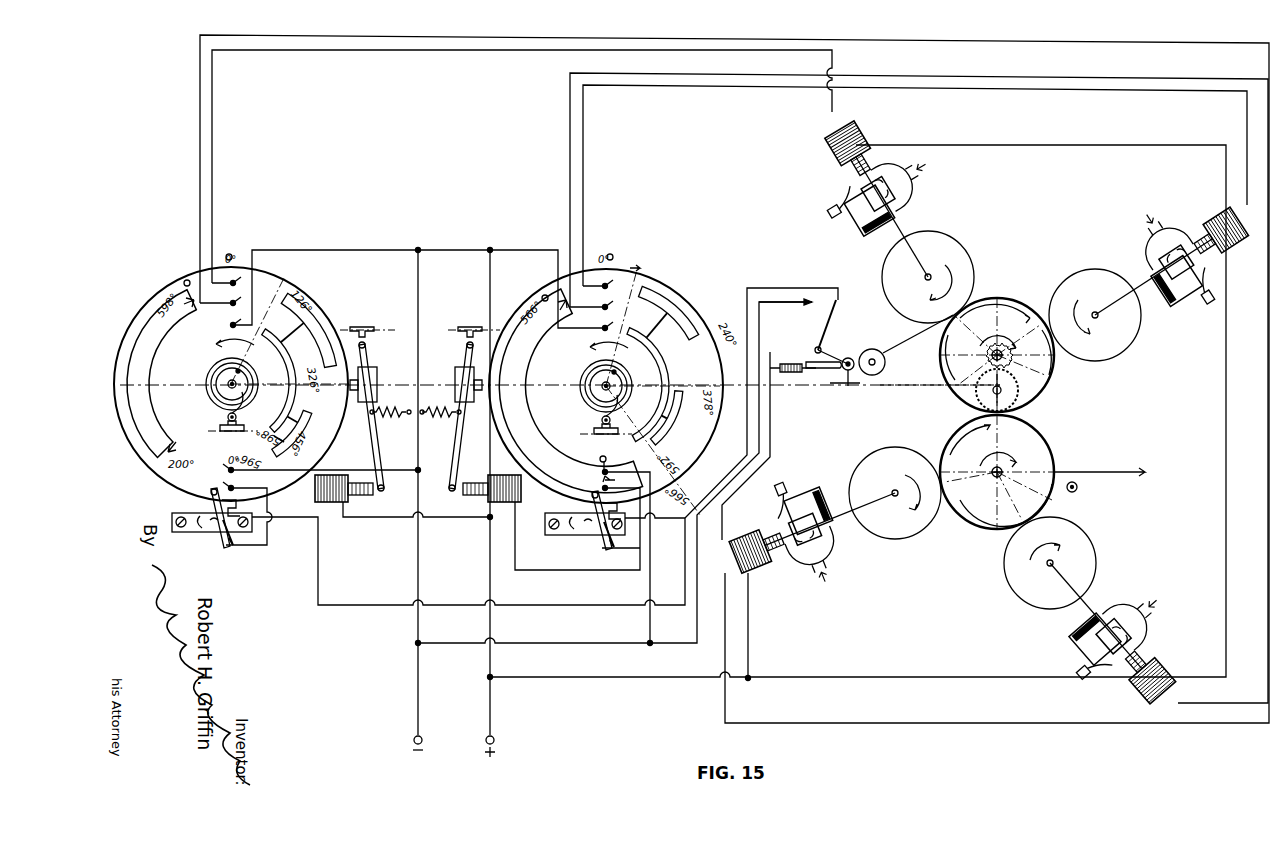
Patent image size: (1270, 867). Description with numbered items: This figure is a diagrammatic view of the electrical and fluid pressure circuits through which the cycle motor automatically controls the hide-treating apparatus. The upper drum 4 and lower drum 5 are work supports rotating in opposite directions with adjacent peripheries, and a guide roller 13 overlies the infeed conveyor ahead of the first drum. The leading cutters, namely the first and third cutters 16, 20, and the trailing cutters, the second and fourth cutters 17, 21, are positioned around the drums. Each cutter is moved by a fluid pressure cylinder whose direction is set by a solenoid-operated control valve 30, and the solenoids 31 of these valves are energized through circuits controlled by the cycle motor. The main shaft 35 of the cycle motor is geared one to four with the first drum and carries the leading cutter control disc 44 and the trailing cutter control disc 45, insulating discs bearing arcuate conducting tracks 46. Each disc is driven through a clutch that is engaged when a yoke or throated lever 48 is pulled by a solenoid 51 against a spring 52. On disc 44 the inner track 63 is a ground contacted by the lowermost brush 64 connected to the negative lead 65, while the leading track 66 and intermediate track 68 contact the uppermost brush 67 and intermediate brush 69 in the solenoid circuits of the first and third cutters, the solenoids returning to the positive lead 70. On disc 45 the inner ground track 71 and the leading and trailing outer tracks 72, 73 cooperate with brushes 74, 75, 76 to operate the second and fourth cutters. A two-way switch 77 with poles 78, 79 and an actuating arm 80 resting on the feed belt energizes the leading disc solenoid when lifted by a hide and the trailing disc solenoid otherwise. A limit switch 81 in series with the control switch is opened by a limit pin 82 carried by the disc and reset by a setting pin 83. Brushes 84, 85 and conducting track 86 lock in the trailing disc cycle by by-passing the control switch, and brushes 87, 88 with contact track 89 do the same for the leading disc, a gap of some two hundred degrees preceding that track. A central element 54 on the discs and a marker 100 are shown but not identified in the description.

The upper drum 4 is at (1046, 384).
The lower drum 5 is at (1048, 436).
The guide roller 13 is at (882, 352).
The first cutter 16 is at (958, 238).
The second cutter 17 is at (1052, 284).
The third cutter 20 is at (905, 540).
The fourth cutter 21 is at (1016, 600).
The solenoid-operated control valve 30 is at (822, 164).
The solenoid 31 is at (856, 120).
The main shaft 35 is at (912, 390).
The leading cutter control disc 44 is at (160, 300).
The trailing cutter control disc 45 is at (680, 298).
The arcuate conducting tracks 46 is at (320, 310).
The yoke or throated lever 48 is at (443, 440).
The solenoid 51 is at (478, 510).
The spring 52 is at (415, 405).
The hub 54 is at (203, 361).
The inner track 63 is at (276, 347).
The lowermost brush 64 is at (243, 318).
The negative lead 65 is at (414, 740).
The leading track 66 is at (282, 298).
The uppermost brush 67 is at (243, 276).
The intermediate track 68 is at (310, 412).
The intermediate brush 69 is at (243, 296).
The positive lead 70 is at (495, 742).
The inner track 71 is at (668, 370).
The leading outer track 72 is at (688, 336).
The trailing outer track 73 is at (676, 432).
The brush 74 is at (615, 321).
The brush 75 is at (616, 279).
The brush 76 is at (616, 300).
The two-way switch 77 is at (837, 341).
The pole 78 is at (785, 312).
The pole 79 is at (832, 306).
The actuating arm 80 is at (842, 355).
The limit switch 81 is at (560, 549).
The limit pin 82 is at (535, 286).
The setting pin 83 is at (593, 494).
The brush 84 is at (608, 470).
The brush 85 is at (608, 490).
The conducting track 86 is at (532, 428).
The brush 87 is at (219, 465).
The brush 88 is at (219, 483).
The contact track 89 is at (150, 368).
The reference mark 100 is at (637, 323).